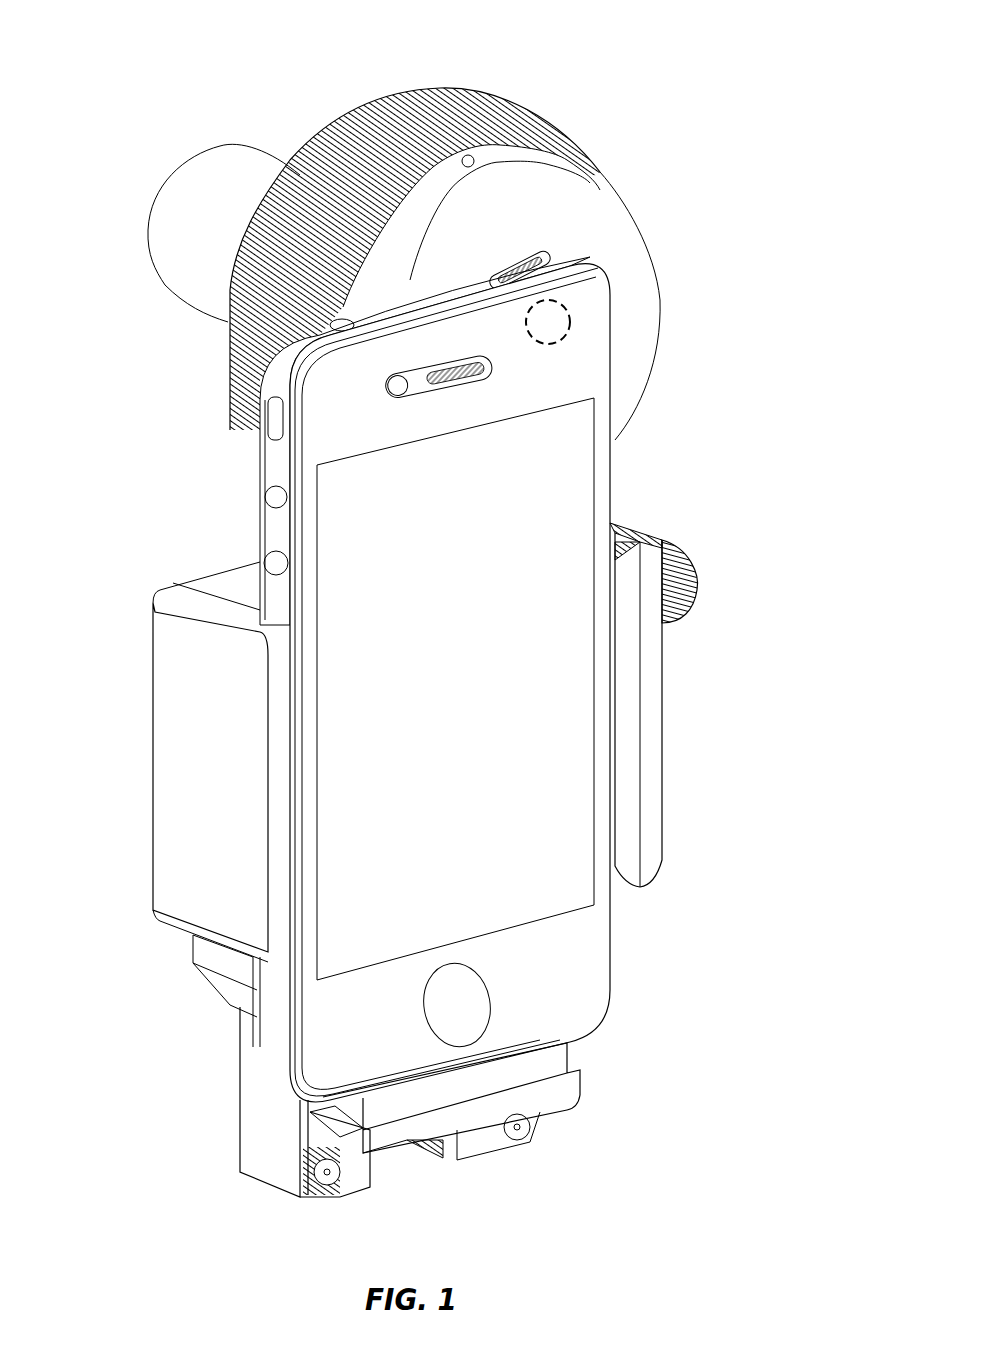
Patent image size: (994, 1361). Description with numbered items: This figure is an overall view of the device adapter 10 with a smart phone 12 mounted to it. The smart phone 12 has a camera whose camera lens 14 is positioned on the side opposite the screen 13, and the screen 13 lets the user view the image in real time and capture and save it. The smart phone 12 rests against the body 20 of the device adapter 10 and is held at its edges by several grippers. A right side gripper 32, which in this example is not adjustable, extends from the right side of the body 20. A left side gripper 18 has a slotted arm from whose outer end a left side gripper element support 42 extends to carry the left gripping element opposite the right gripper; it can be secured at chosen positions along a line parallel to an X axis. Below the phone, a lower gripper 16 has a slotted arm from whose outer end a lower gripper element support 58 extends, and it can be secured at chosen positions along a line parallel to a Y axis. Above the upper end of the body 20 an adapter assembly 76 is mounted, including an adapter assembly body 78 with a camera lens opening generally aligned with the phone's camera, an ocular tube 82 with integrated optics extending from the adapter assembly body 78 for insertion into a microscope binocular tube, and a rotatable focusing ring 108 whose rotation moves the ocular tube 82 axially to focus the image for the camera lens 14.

The device adapter 10 is at (722, 42).
The smart phone 12 is at (620, 489).
The screen 13 is at (541, 713).
The camera lens 14 is at (572, 312).
The lower gripper 16 is at (404, 1188).
The left side gripper 18 is at (126, 932).
The body 20 is at (224, 1006).
The right side gripper 32 is at (732, 750).
The left side gripper element support 42 is at (176, 748).
The lower gripper element support 58 is at (557, 1095).
The adapter assembly 76 is at (650, 157).
The adapter assembly body 78 is at (627, 215).
The ocular tube 82 is at (192, 280).
The focusing ring 108 is at (522, 125).